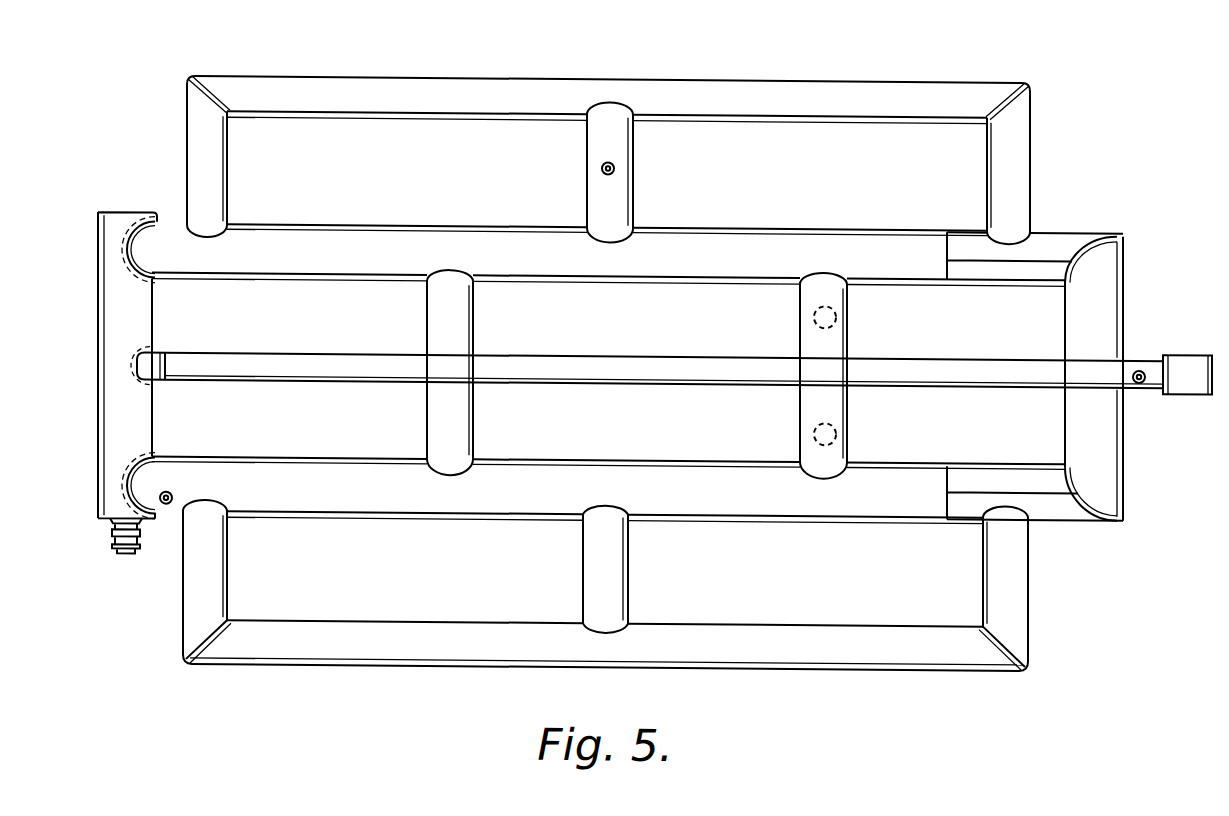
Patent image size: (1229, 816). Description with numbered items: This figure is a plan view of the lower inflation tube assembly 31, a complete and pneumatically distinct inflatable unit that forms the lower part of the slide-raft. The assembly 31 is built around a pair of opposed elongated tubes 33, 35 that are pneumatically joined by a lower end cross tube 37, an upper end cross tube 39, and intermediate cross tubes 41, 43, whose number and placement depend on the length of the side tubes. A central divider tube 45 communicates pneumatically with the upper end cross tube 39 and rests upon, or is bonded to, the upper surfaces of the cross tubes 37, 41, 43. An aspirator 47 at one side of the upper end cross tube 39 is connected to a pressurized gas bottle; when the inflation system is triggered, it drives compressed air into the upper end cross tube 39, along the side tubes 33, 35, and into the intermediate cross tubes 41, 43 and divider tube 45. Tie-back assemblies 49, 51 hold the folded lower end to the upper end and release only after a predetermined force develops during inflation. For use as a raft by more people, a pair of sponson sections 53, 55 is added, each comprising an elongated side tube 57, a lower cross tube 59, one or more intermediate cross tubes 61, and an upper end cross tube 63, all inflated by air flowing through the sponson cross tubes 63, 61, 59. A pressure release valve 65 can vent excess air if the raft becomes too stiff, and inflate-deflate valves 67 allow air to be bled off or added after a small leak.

The lower inflation tube assembly 31 is at (637, 395).
The elongated tube 33 is at (722, 234).
The elongated tube 35 is at (670, 466).
The lower end cross tube 37 is at (1110, 270).
The upper end cross tube 39 is at (135, 318).
The intermediate cross tube 41 is at (460, 323).
The intermediate cross tube 43 is at (835, 343).
The central divider tube 45 is at (292, 359).
The aspirator 47 is at (113, 563).
The tie-back assembly 49 is at (812, 313).
The tie-back assembly 51 is at (838, 430).
The sponson section 53 is at (608, 366).
The sponson section 55 is at (395, 623).
The elongated side tube 57 is at (713, 84).
The lower cross tube 59 is at (1018, 148).
The intermediate cross tube 61 is at (598, 198).
The upper end cross tube 63 is at (205, 186).
The pressure release valve 65 is at (172, 492).
The inflate-deflate valve 67 is at (615, 164).